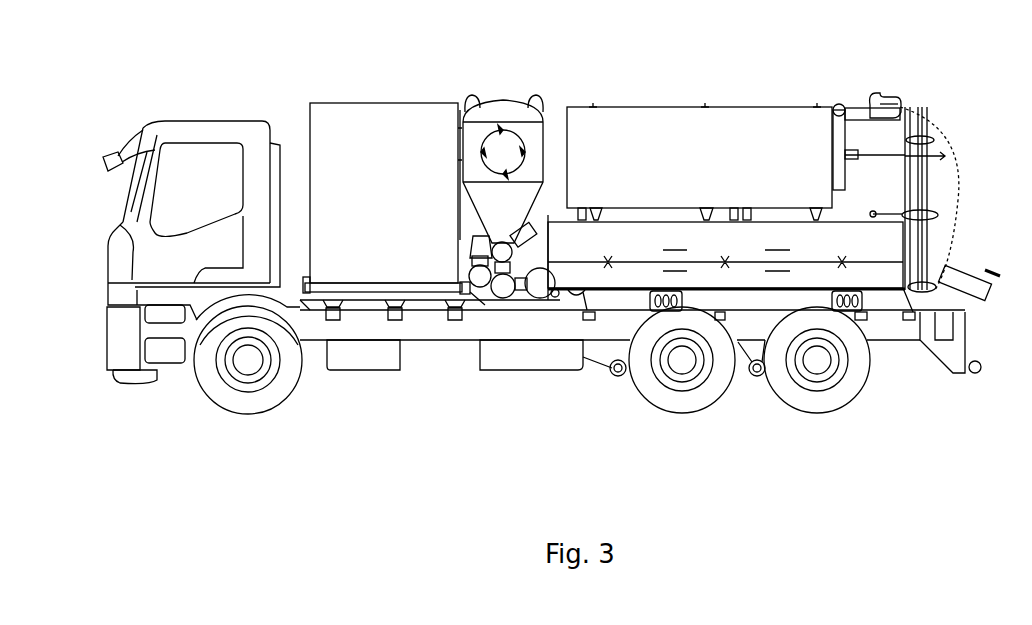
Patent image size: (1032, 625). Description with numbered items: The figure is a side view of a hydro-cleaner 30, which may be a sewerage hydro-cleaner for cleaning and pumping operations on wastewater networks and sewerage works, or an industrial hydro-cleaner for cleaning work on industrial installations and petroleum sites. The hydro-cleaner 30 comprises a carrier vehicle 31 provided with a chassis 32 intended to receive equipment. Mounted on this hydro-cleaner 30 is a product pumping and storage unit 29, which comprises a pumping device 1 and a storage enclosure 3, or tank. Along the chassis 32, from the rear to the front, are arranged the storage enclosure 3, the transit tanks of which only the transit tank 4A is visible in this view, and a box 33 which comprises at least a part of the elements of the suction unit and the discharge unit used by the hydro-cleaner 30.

The pumping device 1 is at (459, 70).
The storage enclosure 3 is at (897, 181).
The transit tank 4A is at (558, 108).
The product pumping and storage unit 29 is at (917, 79).
The hydro-cleaner 30 is at (181, 82).
The carrier vehicle 31 is at (175, 403).
The chassis 32 is at (443, 330).
The box 33 is at (348, 103).